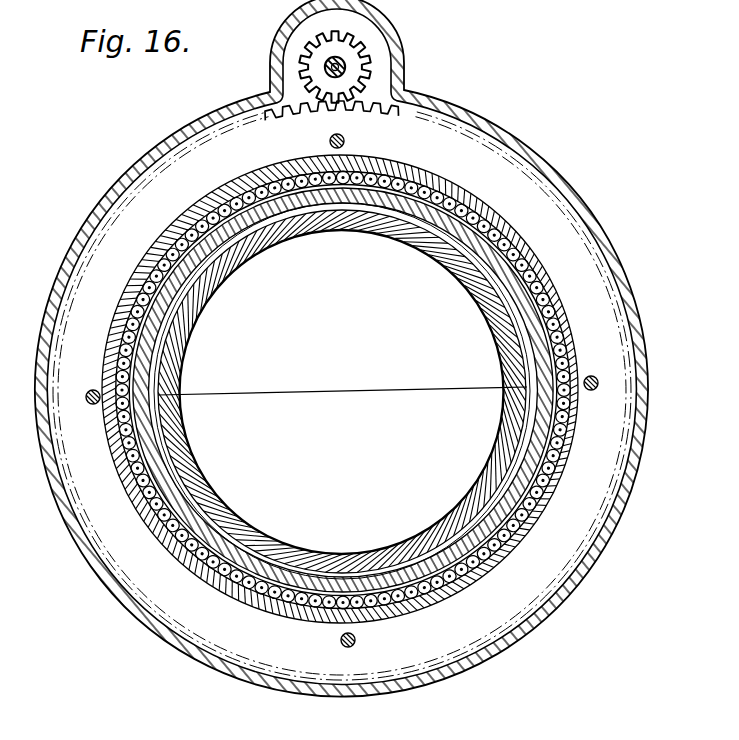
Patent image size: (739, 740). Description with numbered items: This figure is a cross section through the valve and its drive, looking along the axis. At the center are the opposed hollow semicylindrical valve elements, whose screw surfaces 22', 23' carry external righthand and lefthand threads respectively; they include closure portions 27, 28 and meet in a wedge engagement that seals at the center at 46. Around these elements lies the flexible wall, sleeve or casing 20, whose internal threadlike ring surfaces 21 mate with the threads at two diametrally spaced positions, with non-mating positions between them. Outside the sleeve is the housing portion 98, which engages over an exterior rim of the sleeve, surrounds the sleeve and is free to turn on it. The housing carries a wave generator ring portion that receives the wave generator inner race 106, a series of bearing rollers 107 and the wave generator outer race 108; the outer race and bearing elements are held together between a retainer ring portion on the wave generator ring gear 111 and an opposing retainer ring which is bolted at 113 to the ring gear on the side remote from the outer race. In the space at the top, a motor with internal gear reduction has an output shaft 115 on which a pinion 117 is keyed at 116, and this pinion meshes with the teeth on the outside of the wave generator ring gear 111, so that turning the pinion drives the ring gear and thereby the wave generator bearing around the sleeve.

The housing portion 98 is at (547, 160).
The wave generator ring gear 111 is at (264, 112).
The pinion 117 is at (303, 62).
The key 116 is at (344, 61).
The output shaft 115 is at (349, 69).
The bolts 113 is at (343, 128).
The wave generator outer race 108 is at (289, 160).
The sleeve 20 is at (450, 197).
The bearing rollers 107 is at (380, 178).
The wave generator inner race 106 is at (412, 188).
The internal threadlike ring surfaces 21 is at (428, 212).
The screw surface 22' is at (311, 433).
The screw surface 23' is at (342, 392).
The sealing at the center 46 is at (402, 386).
The closure portion 27 is at (330, 329).
The closure portion 28 is at (305, 462).